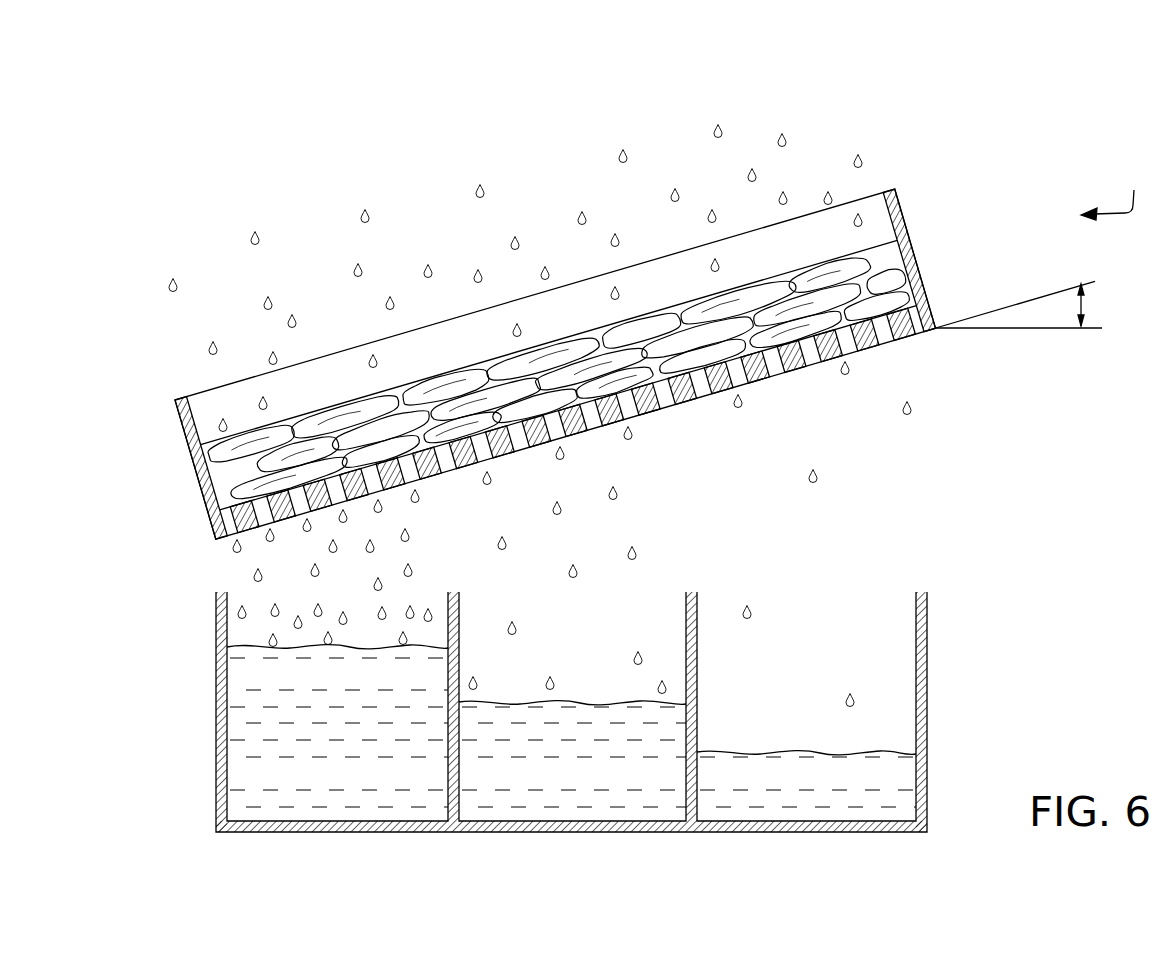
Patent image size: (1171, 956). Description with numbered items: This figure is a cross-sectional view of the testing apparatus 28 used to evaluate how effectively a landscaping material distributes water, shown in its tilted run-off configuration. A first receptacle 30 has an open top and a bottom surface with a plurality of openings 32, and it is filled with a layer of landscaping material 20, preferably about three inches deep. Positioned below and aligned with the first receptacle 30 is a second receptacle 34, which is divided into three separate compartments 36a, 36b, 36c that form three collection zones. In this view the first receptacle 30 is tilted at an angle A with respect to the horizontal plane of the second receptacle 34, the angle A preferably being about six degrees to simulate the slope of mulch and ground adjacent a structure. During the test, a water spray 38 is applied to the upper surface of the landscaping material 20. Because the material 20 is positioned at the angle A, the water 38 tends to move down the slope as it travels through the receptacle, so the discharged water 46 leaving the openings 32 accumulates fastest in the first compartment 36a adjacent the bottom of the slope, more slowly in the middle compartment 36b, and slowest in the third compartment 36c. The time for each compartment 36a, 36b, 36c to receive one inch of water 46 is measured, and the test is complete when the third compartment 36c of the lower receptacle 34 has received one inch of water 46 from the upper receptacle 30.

The landscaping material 20 is at (888, 232).
The testing apparatus 28 is at (1115, 192).
The first receptacle 30 is at (929, 296).
The openings 32 is at (877, 339).
The second receptacle 34 is at (927, 660).
The first compartment 36a is at (322, 793).
The middle compartment 36b is at (555, 793).
The third compartment 36c is at (798, 795).
The water spray 38 is at (487, 215).
The water 46 is at (860, 362).
The angle A is at (1081, 305).